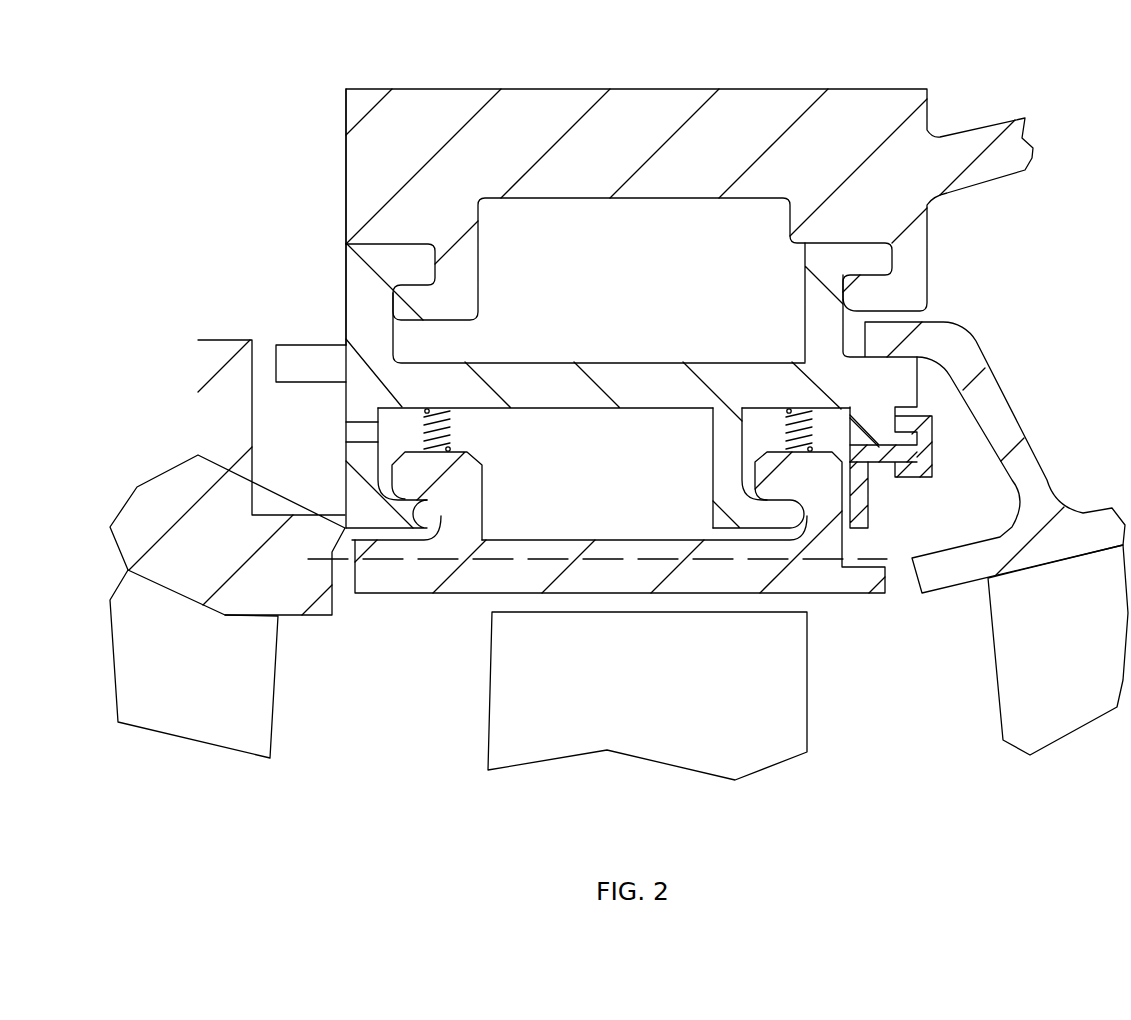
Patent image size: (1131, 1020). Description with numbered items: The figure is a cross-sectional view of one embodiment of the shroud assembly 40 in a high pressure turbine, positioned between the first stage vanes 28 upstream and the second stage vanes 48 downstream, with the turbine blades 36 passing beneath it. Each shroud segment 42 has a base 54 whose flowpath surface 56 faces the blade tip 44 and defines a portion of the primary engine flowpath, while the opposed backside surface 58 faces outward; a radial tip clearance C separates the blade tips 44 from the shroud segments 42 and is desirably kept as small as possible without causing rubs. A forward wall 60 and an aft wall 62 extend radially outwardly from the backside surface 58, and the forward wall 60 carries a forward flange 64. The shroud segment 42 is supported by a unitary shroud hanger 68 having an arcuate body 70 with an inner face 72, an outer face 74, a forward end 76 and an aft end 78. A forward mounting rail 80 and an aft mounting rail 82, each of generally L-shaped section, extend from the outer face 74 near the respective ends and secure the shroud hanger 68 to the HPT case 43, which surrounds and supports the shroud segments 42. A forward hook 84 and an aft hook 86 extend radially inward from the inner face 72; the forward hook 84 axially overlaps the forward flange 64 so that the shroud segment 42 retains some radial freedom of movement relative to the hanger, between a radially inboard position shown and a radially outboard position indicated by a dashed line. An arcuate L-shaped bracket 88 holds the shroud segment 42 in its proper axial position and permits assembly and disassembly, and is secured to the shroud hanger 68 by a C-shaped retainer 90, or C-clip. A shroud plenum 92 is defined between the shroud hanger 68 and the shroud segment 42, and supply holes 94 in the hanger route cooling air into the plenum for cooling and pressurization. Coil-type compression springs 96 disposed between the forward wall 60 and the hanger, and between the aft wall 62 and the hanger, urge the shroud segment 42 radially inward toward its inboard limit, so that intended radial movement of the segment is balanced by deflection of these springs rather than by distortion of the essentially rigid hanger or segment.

The first stage vanes 28 is at (230, 674).
The turbine blades 36 is at (661, 698).
The shroud assembly 40 is at (937, 57).
The shroud segment 42 is at (835, 609).
The HPT case 43 is at (358, 123).
The blade tips 44 is at (505, 611).
The second stage vanes 48 is at (1086, 655).
The base 54 is at (367, 585).
The flowpath surface 56 is at (403, 594).
The backside surface 58 is at (543, 539).
The forward wall 60 is at (468, 496).
The aft wall 62 is at (835, 545).
The forward flange 64 is at (402, 476).
The shroud hanger 68 is at (338, 298).
The arcuate body 70 is at (617, 395).
The inner face 72 is at (683, 409).
The outer face 74 is at (673, 361).
The forward end 76 is at (315, 373).
The aft end 78 is at (905, 388).
The forward mounting rail 80 is at (357, 258).
The aft mounting rail 82 is at (868, 262).
The forward hook 84 is at (350, 497).
The aft hook 86 is at (723, 514).
The bracket 88 is at (858, 503).
The retainer 90 is at (918, 443).
The shroud plenum 92 is at (619, 476).
The supply holes 94 is at (352, 437).
The springs 96 is at (452, 432).
The radial tip clearance C is at (608, 567).